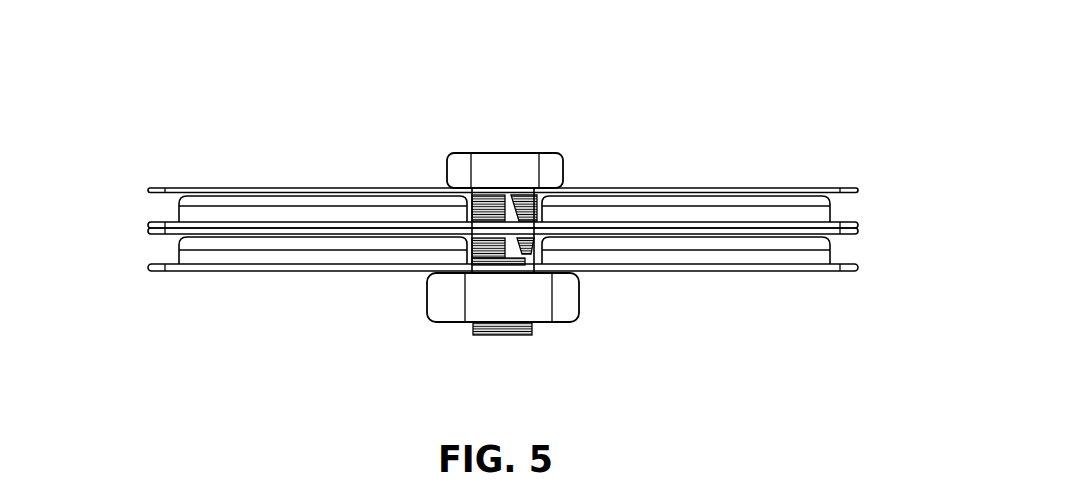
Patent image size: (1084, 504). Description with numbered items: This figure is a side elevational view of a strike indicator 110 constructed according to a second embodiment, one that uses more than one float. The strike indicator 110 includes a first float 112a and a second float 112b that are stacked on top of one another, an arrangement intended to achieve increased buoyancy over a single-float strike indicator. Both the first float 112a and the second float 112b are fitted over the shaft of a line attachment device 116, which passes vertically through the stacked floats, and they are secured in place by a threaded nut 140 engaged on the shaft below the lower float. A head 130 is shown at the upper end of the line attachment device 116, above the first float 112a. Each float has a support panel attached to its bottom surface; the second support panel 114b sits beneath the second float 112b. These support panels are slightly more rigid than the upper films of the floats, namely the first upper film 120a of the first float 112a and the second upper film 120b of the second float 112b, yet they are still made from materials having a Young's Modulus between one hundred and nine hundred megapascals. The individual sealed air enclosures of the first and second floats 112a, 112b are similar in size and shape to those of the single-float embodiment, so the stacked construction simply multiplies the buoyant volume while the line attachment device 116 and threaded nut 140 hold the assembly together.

The strike indicator 110 is at (119, 77).
The first float 112a is at (115, 207).
The second float 112b is at (115, 249).
The second support panel 114b is at (851, 225).
The line attachment device 116 is at (503, 136).
The first upper film 120a is at (842, 190).
The second upper film 120b is at (852, 233).
The bolt head 130 is at (551, 162).
The threaded nut 140 is at (530, 310).